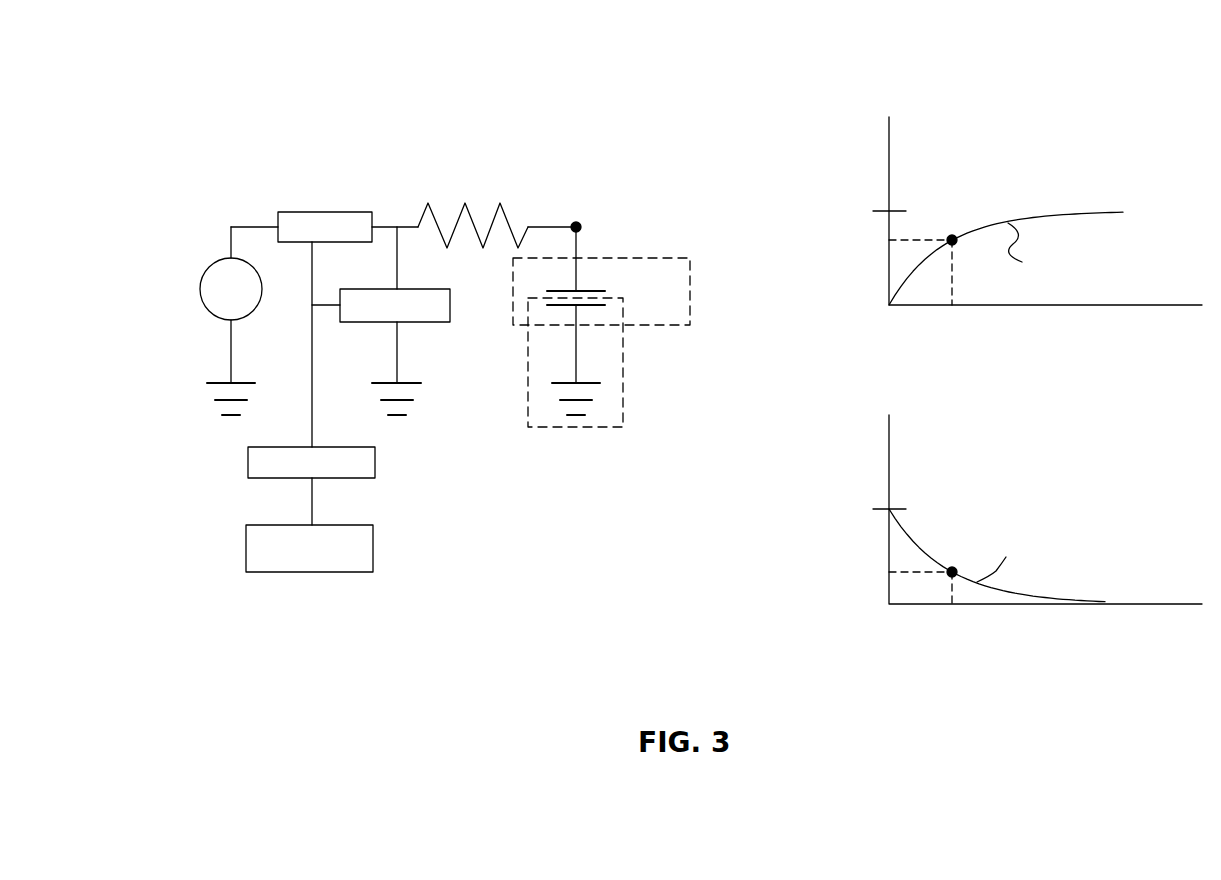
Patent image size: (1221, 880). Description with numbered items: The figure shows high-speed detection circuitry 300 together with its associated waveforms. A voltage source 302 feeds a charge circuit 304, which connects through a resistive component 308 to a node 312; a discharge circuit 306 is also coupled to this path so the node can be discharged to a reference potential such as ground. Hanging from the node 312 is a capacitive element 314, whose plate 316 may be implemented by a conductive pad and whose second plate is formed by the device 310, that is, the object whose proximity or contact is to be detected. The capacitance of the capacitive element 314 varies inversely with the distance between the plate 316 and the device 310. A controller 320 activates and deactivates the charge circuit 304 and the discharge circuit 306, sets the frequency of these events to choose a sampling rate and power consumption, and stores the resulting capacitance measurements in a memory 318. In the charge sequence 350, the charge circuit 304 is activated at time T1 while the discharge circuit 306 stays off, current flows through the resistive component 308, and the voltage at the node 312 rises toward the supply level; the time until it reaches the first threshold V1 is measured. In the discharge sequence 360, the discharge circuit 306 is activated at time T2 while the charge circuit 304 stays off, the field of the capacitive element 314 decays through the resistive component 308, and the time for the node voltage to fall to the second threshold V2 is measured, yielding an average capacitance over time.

The high-speed detection circuitry 300 is at (297, 137).
The voltage source 302 is at (202, 293).
The charge circuit 304 is at (300, 212).
The discharge circuit 306 is at (450, 315).
The resistive component 308 is at (477, 238).
The device 310 is at (623, 418).
The node 312 is at (579, 223).
The capacitive element 314 is at (690, 305).
The plate 316 is at (603, 291).
The memory 318 is at (373, 565).
The controller 320 is at (375, 470).
The charge sequence 350 is at (1078, 136).
The discharge sequence 360 is at (1116, 459).